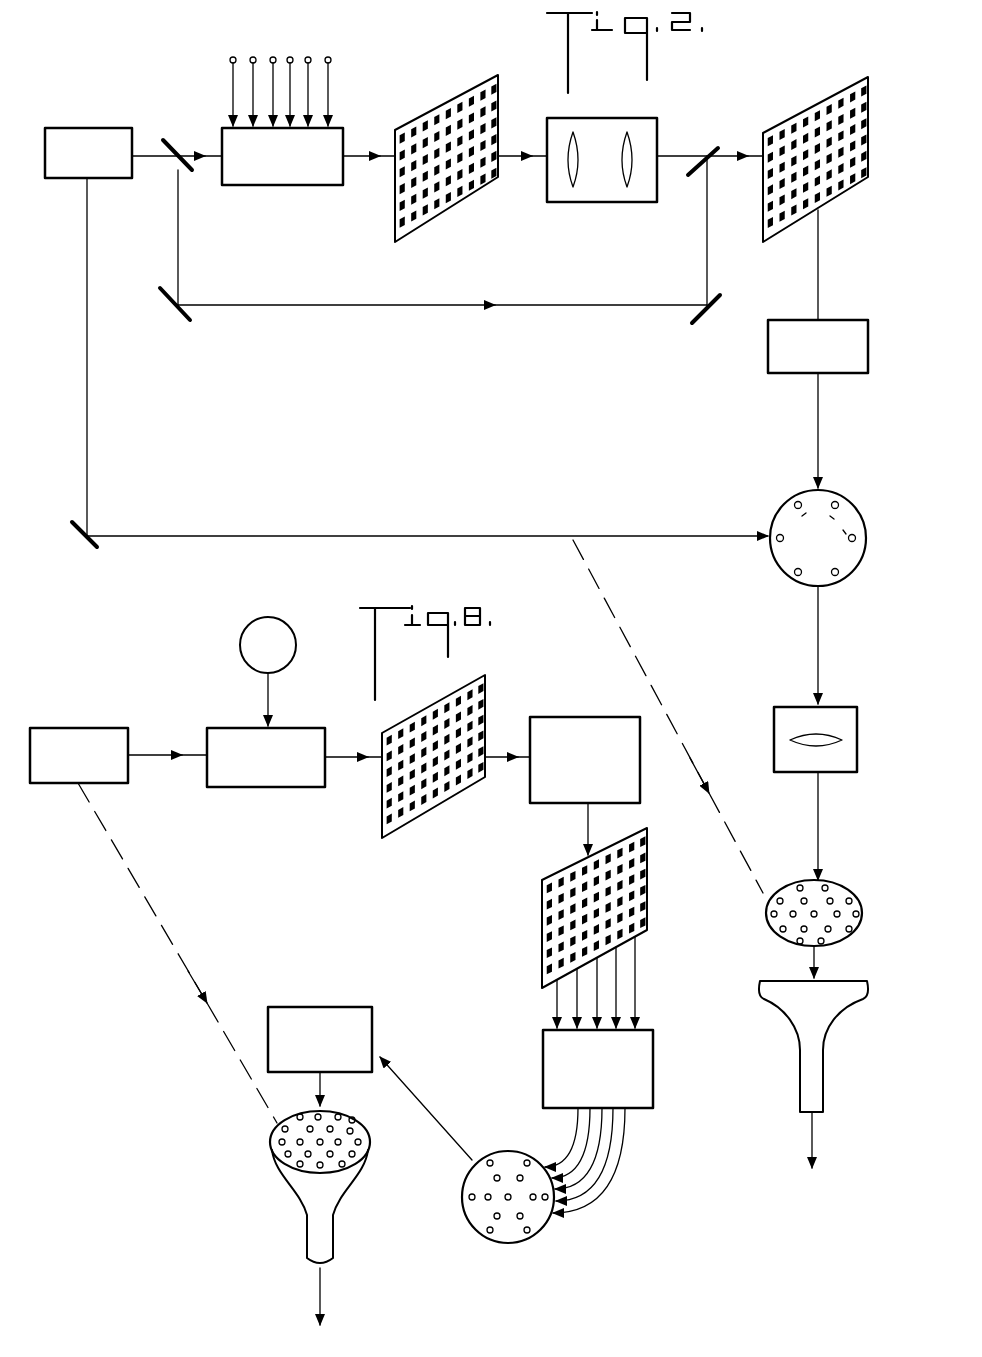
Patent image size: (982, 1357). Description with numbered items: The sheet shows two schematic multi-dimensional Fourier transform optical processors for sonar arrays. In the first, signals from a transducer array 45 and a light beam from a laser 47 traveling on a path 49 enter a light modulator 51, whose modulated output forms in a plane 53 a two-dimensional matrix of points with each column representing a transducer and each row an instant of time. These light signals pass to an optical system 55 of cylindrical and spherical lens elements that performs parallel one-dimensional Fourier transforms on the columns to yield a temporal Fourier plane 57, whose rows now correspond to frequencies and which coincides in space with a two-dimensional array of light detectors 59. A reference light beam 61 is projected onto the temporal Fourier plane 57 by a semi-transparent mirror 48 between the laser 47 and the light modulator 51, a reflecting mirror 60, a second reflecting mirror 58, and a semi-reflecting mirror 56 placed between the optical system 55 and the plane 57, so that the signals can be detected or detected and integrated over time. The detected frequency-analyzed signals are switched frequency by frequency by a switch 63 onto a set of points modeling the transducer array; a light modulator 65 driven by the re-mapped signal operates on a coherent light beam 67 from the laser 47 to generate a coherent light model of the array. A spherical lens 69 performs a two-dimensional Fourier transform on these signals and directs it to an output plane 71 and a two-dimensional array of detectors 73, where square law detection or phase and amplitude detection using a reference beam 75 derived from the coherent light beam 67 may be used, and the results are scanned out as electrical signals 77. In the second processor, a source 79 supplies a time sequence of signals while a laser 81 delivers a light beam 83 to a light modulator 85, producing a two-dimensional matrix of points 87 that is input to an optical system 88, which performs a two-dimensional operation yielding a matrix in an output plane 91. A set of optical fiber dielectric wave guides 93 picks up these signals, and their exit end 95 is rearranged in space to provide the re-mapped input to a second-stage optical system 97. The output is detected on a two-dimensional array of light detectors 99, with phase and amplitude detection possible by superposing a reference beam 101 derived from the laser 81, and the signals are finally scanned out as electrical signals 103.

In FIG. 2, the transducer array 45 is at (208, 84).
In FIG. 2, the laser 47 is at (92, 128).
In FIG. 2, the semi-transparent mirror 48 is at (175, 138).
In FIG. 2, the path 49 is at (204, 160).
In FIG. 2, the light modulator 51 is at (297, 185).
In FIG. 2, the plane 53 is at (448, 207).
In FIG. 2, the optical system 55 is at (607, 202).
In FIG. 2, the semi-reflecting mirror 56 is at (712, 147).
In FIG. 2, the temporal Fourier plane 57 is at (870, 80).
In FIG. 2, the second reflecting mirror 58 is at (707, 318).
In FIG. 2, the two-dimensional array of light detectors 59 is at (900, 92).
In FIG. 2, the reflecting mirror 60 is at (160, 293).
In FIG. 2, the reference light beam 61 is at (345, 308).
In FIG. 2, the switch 63 is at (768, 370).
In FIG. 2, the light modulator 65 is at (795, 497).
In FIG. 2, the coherent light beam 67 is at (445, 535).
In FIG. 2, the spherical lens 69 is at (776, 707).
In FIG. 2, the output plane 71 is at (838, 886).
In FIG. 2, the two-dimensional array of detectors 73 is at (845, 1003).
In FIG. 2, the reference beam 75 is at (638, 650).
In FIG. 2, the electrical signals 77 is at (822, 1135).
In FIG. 3, the source 79 is at (240, 660).
In FIG. 3, the laser 81 is at (83, 728).
In FIG. 3, the light beam 83 is at (185, 758).
In FIG. 3, the light modulator 85 is at (278, 787).
In FIG. 3, the two-dimensional matrix of points 87 is at (430, 815).
In FIG. 3, the optical system 88 is at (592, 717).
In FIG. 3, the output plane 91 is at (542, 917).
In FIG. 3, the optical fiber dielectric wave guides 93 is at (543, 1060).
In FIG. 3, the exit end 95 is at (512, 1151).
In FIG. 3, the optical system 97 is at (330, 1007).
In FIG. 3, the two-dimensional array of light detectors 99 is at (372, 1136).
In FIG. 3, the reference beam 101 is at (178, 957).
In FIG. 3, the electrical signals 103 is at (322, 1277).